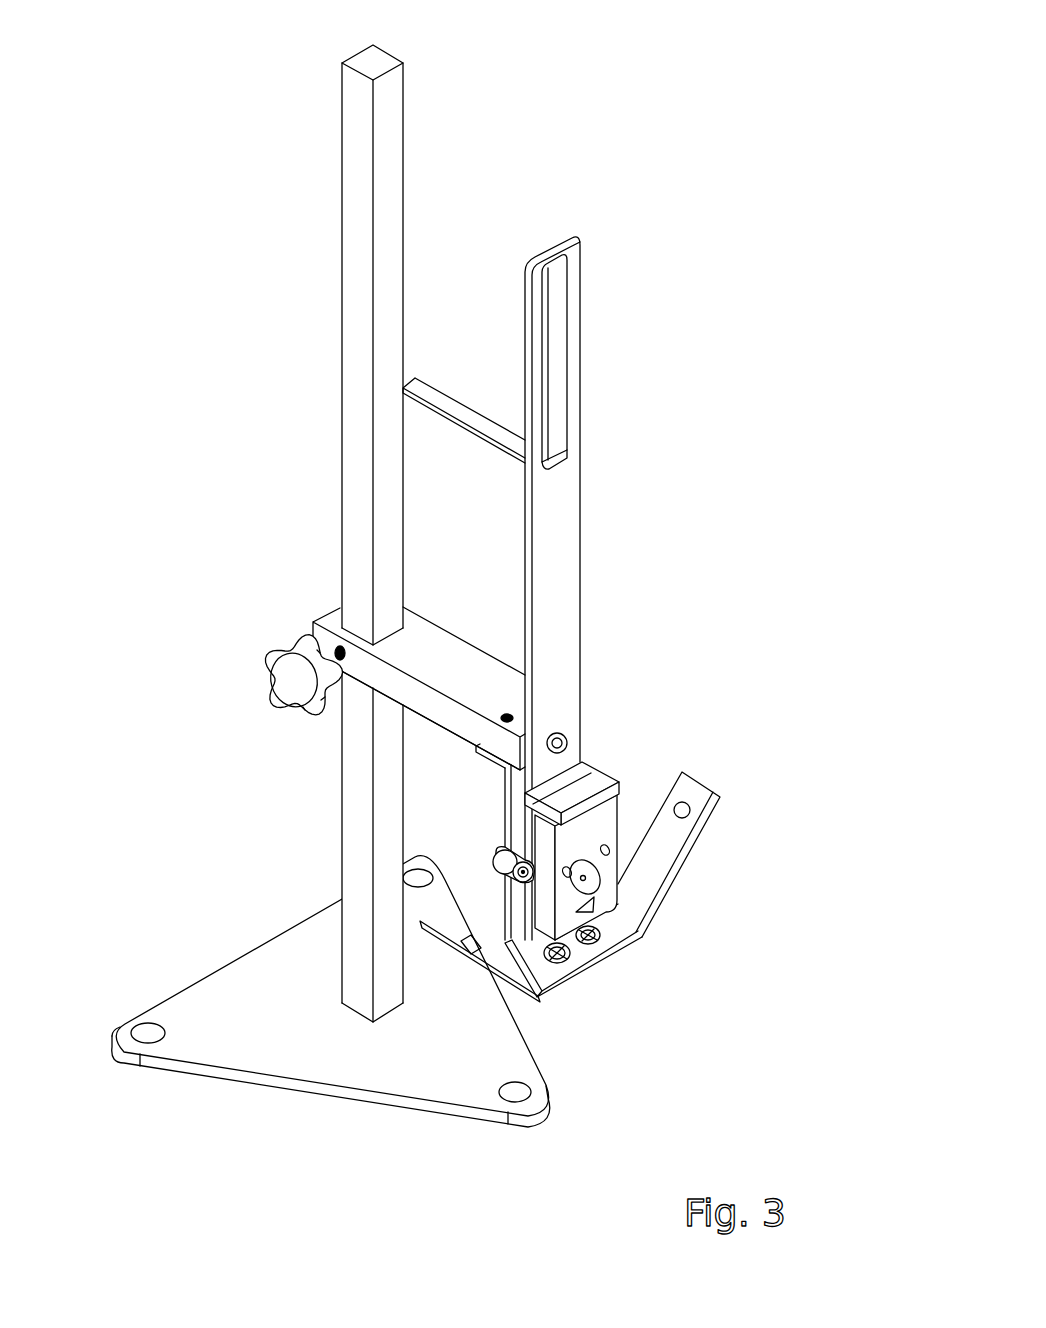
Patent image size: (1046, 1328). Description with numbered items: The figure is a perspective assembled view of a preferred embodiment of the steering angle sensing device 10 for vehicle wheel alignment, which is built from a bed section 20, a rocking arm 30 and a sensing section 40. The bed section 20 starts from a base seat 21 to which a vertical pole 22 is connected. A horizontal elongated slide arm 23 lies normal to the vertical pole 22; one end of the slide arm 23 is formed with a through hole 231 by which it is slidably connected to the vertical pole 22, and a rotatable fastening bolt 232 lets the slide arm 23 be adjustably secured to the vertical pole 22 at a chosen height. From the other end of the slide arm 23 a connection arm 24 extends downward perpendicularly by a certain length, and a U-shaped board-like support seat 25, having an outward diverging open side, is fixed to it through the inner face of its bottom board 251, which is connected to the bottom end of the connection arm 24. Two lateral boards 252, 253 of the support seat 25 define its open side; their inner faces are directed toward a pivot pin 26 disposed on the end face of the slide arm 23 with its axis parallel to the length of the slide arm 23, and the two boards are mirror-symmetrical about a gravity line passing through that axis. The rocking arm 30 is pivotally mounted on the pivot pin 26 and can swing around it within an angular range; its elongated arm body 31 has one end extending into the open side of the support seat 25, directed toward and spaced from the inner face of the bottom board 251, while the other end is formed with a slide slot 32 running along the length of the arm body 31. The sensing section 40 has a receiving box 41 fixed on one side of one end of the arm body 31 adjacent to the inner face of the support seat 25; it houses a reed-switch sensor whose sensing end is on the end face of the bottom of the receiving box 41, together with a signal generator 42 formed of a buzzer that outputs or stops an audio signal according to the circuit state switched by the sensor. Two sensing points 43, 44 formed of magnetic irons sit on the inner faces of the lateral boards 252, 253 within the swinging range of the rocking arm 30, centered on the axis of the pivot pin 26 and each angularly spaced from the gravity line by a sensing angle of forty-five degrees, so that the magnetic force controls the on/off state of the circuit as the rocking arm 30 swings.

The steering angle sensing device 10 is at (460, 613).
The bed section 20 is at (331, 604).
The base seat 21 is at (287, 1050).
The vertical pole 22 is at (388, 93).
The slide arm 23 is at (450, 650).
The through hole 231 is at (338, 642).
The rotatable fastening bolt 232 is at (295, 681).
The connection arm 24 is at (503, 808).
The support seat 25 is at (591, 963).
The bottom board 251 is at (590, 969).
The lateral board 252 is at (477, 967).
The lateral board 253 is at (702, 790).
The pivot pin 26 is at (568, 738).
The rocking arm 30 is at (619, 588).
The arm body 31 is at (568, 590).
The slide slot 32 is at (568, 355).
The sensing section 40 is at (662, 807).
The receiving box 41 is at (613, 800).
The signal generator 42 is at (600, 878).
The sensing point 43 is at (469, 955).
The sensing point 44 is at (694, 810).